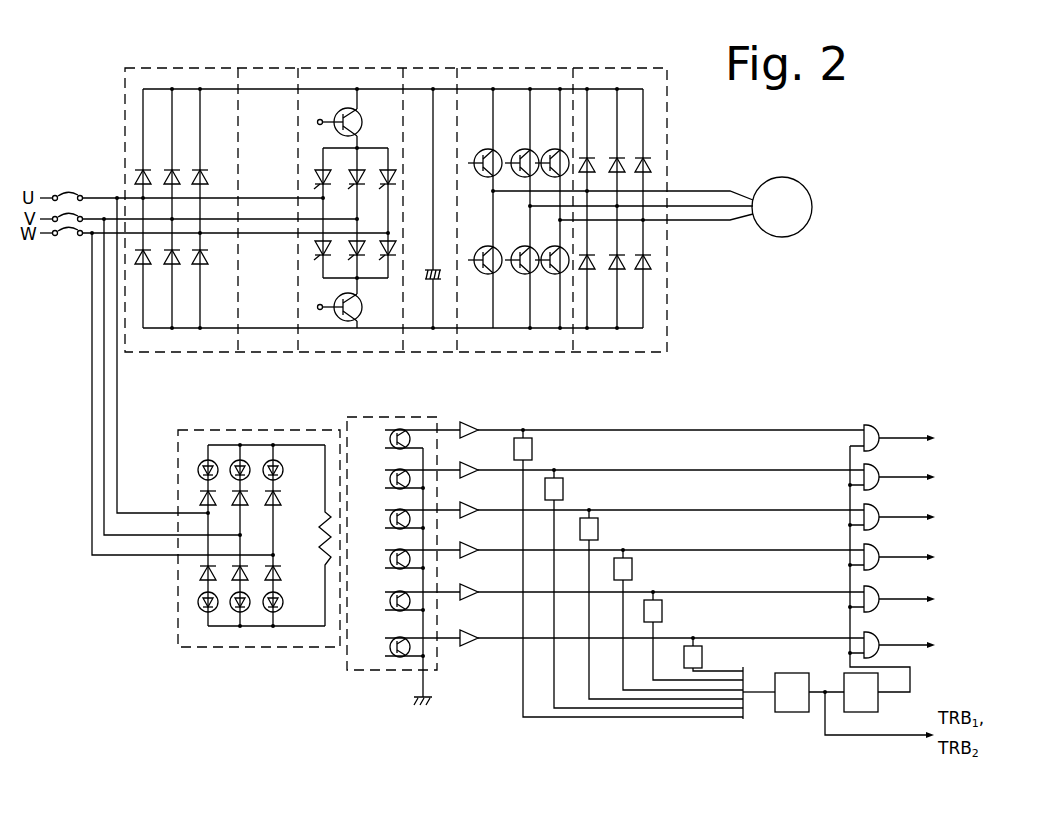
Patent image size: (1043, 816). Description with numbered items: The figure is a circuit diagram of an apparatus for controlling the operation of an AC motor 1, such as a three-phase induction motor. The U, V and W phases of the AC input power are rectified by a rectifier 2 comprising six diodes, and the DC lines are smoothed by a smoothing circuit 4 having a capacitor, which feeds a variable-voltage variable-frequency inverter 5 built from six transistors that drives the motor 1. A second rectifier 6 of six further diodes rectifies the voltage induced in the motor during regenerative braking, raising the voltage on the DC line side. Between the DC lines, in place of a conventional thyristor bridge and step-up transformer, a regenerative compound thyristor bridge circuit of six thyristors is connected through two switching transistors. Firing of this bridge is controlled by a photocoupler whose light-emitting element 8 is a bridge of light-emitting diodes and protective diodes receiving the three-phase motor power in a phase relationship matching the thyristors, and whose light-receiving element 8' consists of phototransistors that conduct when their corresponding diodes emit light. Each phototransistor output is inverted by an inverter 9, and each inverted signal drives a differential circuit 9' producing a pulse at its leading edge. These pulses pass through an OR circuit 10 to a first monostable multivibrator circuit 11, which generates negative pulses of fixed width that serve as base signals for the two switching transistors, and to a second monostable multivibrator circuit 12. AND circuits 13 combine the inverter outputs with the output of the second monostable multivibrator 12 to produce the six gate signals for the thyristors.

The AC motor 1 is at (799, 183).
The rectifier 2 is at (135, 68).
The smoothing circuit 4 is at (444, 68).
The variable-voltage variable-frequency inverter 5 is at (527, 68).
The rectifier 6 is at (618, 68).
The photocoupler light-emitting element 8 is at (259, 521).
The photocoupler light-receiving element 8' is at (403, 545).
The inverter 9 is at (662, 518).
The differential circuit 9' is at (624, 548).
The OR circuit 10 is at (745, 722).
The first monostable multivibrator circuit 11 is at (790, 714).
The second monostable multivibrator circuit 12 is at (862, 714).
The AND circuits 13 is at (876, 425).